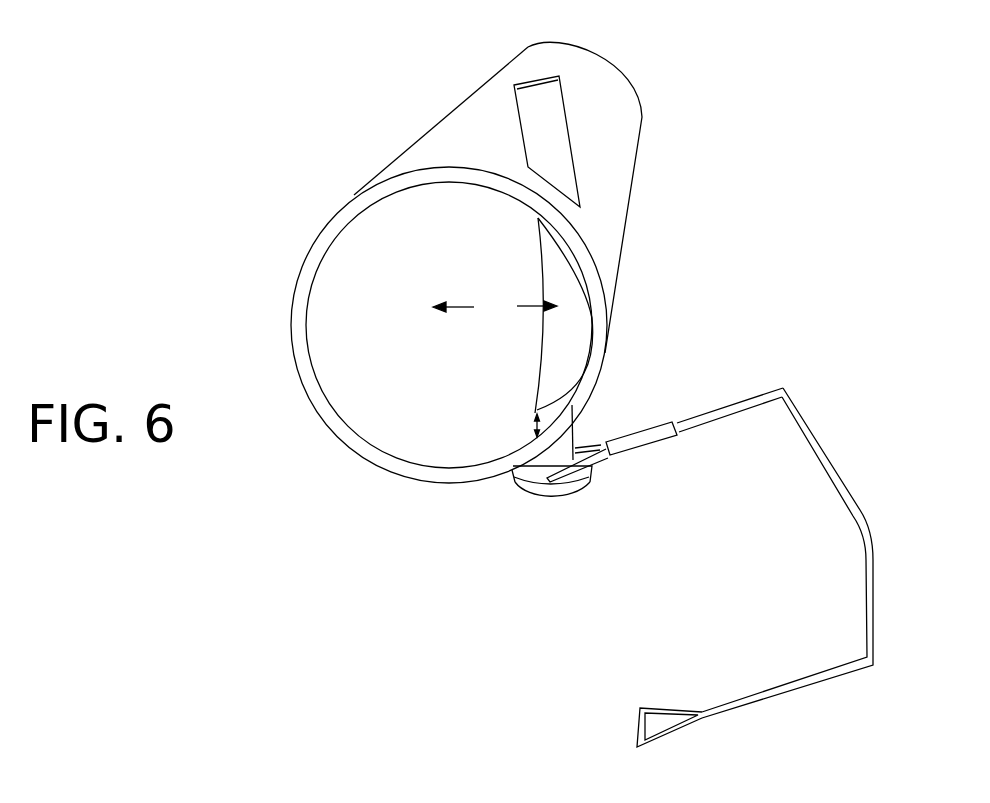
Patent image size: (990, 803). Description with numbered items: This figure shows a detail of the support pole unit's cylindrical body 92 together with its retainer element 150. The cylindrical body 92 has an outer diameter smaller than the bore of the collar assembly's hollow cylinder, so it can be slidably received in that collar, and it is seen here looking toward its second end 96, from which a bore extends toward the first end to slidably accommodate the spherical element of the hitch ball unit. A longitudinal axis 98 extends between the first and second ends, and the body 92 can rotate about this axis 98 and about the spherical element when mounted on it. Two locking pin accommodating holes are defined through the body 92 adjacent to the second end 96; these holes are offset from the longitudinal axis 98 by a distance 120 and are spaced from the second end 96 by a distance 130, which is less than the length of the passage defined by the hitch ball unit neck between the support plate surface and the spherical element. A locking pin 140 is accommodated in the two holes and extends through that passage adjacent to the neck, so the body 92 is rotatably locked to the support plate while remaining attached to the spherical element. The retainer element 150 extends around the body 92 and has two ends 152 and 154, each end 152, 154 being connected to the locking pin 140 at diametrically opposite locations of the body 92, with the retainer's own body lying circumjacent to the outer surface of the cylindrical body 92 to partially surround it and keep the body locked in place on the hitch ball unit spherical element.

The cylindrical body 92 is at (485, 127).
The second end 96 is at (370, 193).
The longitudinal axis 98 is at (433, 307).
The distance 120 is at (495, 306).
The distance 130 is at (534, 427).
The locking pin 140 is at (548, 126).
The retainer element 150 is at (853, 483).
The end 152 is at (594, 476).
The end 154 is at (678, 732).